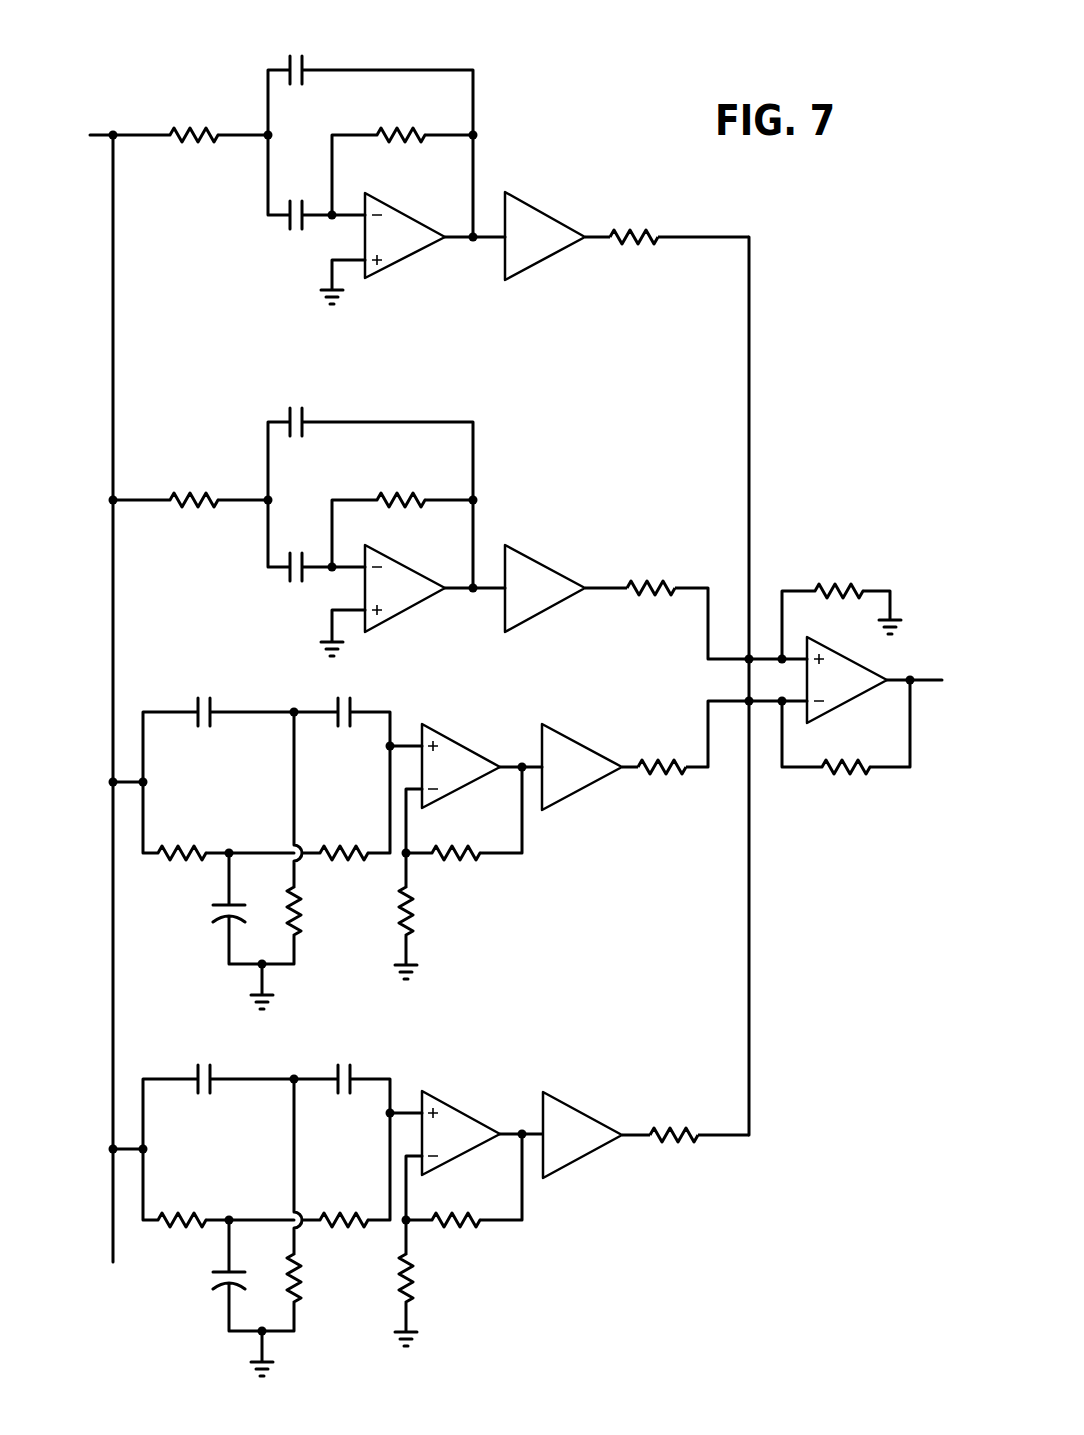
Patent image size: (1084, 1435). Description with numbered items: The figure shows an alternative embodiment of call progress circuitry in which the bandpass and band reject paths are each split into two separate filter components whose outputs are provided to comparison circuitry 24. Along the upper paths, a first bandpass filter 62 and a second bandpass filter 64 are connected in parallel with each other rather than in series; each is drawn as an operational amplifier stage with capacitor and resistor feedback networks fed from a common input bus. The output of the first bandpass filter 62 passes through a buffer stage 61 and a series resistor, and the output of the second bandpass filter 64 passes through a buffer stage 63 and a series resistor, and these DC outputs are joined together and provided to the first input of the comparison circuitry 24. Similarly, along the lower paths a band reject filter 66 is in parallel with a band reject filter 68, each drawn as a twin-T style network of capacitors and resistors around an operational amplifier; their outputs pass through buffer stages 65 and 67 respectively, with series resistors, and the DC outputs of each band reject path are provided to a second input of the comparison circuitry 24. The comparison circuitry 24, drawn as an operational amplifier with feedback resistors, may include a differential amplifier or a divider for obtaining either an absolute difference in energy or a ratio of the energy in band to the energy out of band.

The comparison circuitry 24 is at (808, 686).
The buffer amplifier 61 is at (544, 222).
The first bandpass filter 62 is at (268, 70).
The buffer amplifier 63 is at (543, 576).
The second bandpass filter 64 is at (268, 422).
The buffer amplifier 65 is at (573, 752).
The band reject filter 66 is at (142, 712).
The buffer amplifier 67 is at (576, 1118).
The band reject filter 68 is at (142, 1079).